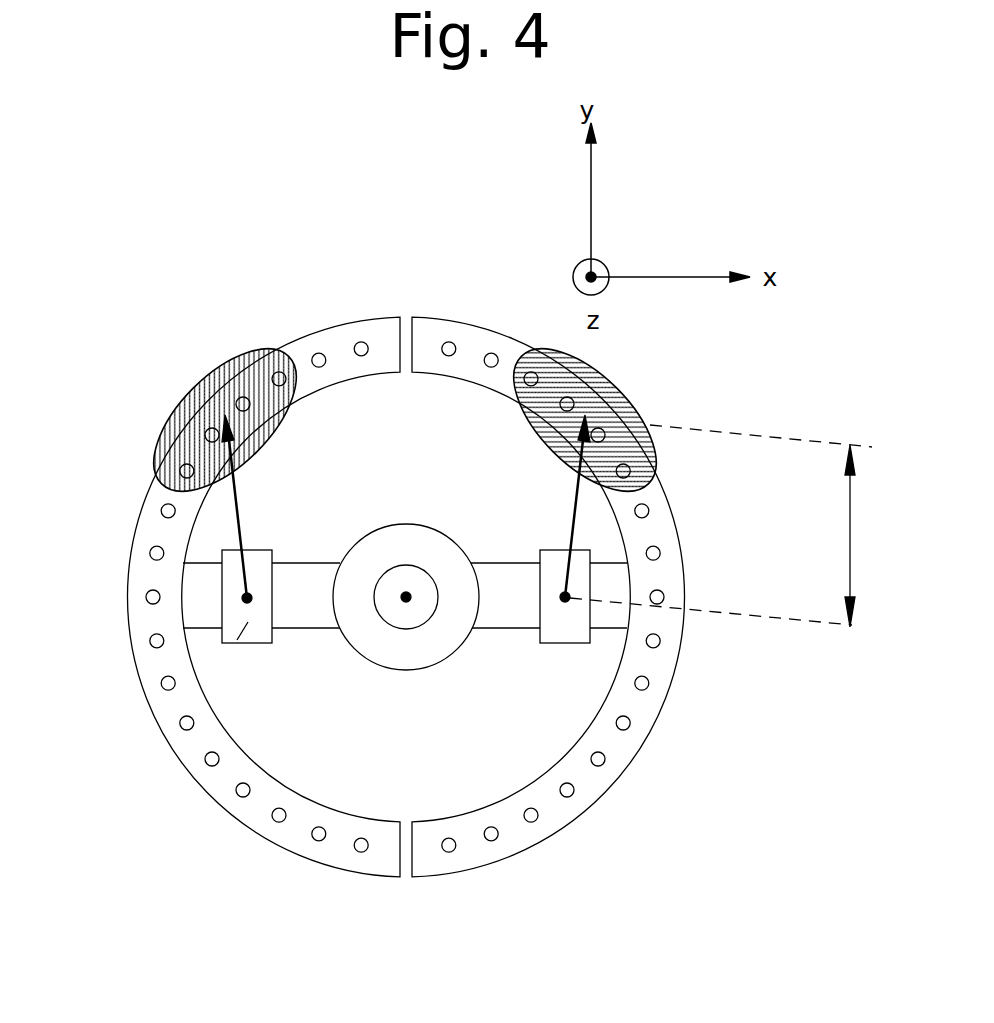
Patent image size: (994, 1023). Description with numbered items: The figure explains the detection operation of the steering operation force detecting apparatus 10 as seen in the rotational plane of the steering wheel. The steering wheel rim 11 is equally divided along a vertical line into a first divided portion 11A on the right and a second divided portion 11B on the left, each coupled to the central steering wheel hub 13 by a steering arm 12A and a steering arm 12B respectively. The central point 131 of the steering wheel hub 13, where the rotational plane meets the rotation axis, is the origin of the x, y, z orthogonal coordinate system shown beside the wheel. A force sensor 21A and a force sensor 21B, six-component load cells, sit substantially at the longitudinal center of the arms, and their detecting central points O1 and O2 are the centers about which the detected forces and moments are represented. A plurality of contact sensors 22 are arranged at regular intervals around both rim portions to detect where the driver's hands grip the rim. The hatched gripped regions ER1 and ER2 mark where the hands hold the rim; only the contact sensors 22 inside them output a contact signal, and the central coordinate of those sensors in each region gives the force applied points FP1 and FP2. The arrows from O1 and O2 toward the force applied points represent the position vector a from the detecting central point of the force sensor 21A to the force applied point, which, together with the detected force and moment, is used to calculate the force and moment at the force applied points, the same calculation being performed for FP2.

The steering operation force detecting apparatus 10 is at (153, 305).
The steering wheel rim 11 is at (413, 536).
The first divided portion 11A is at (665, 530).
The second divided portion 11B is at (147, 528).
The steering arm 12A is at (500, 578).
The steering arm 12B is at (303, 583).
The steering wheel hub 13 is at (397, 621).
The central point 131 is at (404, 595).
The force sensor 21A is at (553, 632).
The force sensor 21B is at (257, 643).
The contact sensors 22 is at (282, 370).
The detecting central point O1 is at (567, 602).
The detecting central point O2 is at (245, 603).
The force applied point FP1 is at (520, 428).
The force applied point FP2 is at (262, 428).
The gripped region ER1 is at (620, 388).
The gripped region ER2 is at (193, 393).
The position vector a is at (843, 520).